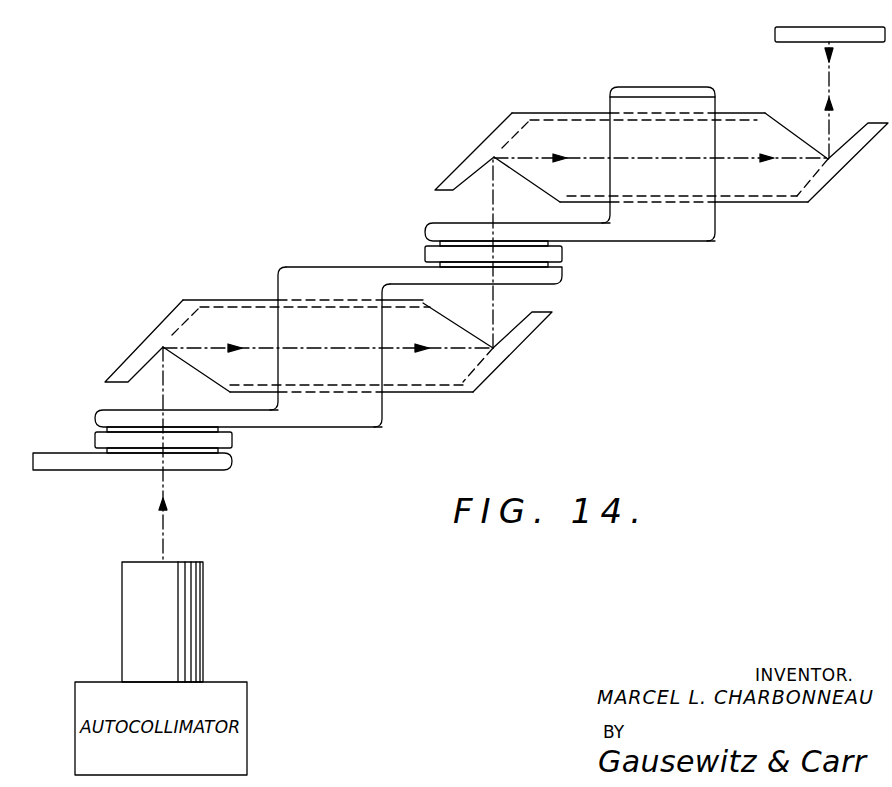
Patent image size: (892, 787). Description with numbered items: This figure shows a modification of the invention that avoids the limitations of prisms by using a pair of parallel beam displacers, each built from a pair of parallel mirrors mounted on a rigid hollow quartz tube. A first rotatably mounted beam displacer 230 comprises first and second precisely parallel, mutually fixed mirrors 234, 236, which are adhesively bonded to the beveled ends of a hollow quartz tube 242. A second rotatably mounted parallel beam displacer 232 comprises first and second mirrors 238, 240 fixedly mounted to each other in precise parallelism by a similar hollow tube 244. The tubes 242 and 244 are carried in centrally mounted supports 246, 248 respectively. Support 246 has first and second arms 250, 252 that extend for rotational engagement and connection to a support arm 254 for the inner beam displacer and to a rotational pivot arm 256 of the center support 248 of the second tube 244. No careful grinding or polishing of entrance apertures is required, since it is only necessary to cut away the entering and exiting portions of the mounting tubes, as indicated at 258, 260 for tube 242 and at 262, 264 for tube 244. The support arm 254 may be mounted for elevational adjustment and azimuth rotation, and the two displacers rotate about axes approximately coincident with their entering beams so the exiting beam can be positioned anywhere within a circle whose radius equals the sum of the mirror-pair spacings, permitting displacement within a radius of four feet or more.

The first beam displacer 230 is at (238, 299).
The second parallel beam displacer 232 is at (760, 205).
The first mirror 234 is at (152, 332).
The second mirror 236 is at (512, 358).
The first mirror 238 is at (478, 143).
The second mirror 240 is at (843, 172).
The hollow quartz tube 242 is at (432, 395).
The hollow tube 244 is at (561, 112).
The support 246 is at (313, 428).
The center support 248 is at (662, 242).
The first arm 250 is at (100, 410).
The second arm 252 is at (562, 288).
The support arm 254 is at (60, 472).
The rotational pivot arm 256 is at (442, 223).
The cut-away entering portion 258 is at (183, 366).
The cut-away exiting portion 260 is at (462, 324).
The cut-away entering portion 262 is at (518, 181).
The cut-away exiting portion 264 is at (791, 132).